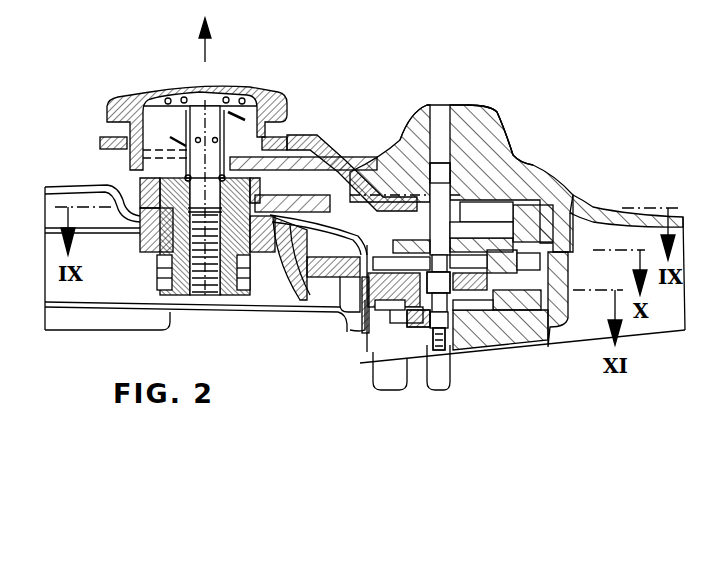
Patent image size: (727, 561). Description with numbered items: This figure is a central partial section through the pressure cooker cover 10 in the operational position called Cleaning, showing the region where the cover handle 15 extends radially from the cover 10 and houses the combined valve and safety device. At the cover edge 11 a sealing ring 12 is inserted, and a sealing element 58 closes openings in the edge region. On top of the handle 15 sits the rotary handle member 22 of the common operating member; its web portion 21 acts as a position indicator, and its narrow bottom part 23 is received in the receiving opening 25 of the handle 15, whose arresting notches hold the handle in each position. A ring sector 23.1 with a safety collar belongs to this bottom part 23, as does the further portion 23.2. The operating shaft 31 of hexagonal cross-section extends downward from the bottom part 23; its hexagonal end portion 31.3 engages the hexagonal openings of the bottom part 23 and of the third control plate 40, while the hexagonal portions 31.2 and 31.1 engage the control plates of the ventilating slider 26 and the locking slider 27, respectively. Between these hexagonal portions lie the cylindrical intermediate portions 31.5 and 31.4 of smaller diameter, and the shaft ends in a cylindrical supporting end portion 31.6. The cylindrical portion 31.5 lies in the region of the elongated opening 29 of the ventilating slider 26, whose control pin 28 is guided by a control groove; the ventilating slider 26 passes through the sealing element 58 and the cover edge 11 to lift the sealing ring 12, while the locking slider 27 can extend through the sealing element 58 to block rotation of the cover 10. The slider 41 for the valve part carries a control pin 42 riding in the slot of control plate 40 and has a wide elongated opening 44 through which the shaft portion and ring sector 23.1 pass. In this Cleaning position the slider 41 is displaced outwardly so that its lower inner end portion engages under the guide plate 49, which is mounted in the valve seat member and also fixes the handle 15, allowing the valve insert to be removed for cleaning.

The cover 10 is at (60, 187).
The guide plate 49 is at (270, 192).
The sealing ring 12 is at (280, 288).
The plate 23.2 is at (329, 160).
The ring sector 23.1 is at (309, 121).
The slider 41 is at (372, 185).
The bottom part 23 is at (398, 183).
The web portion 21 is at (437, 123).
The rotary handle member 22 is at (455, 157).
The operating shaft 31 is at (483, 167).
The hexagonal end portion 31.3 is at (435, 173).
The receiving opening 25 is at (500, 210).
The wide elongated opening 44 is at (530, 240).
The control pin 42 is at (560, 235).
The handle 15 is at (637, 217).
The third control plate 40 is at (568, 252).
The cylindrical intermediate portion 31.5 is at (490, 270).
The ventilating slider 26 is at (323, 270).
The cover edge 11 is at (357, 318).
The sealing element 58 is at (363, 335).
The elongated opening 29 is at (395, 272).
The locking slider 27 is at (398, 320).
The control pin 28 is at (488, 328).
The hexagonal portion 31.2 is at (420, 300).
The hexagonal portion 31.1 is at (432, 320).
The cylindrical supporting end portion 31.6 is at (447, 330).
The cylindrical portion 31.4 is at (462, 300).